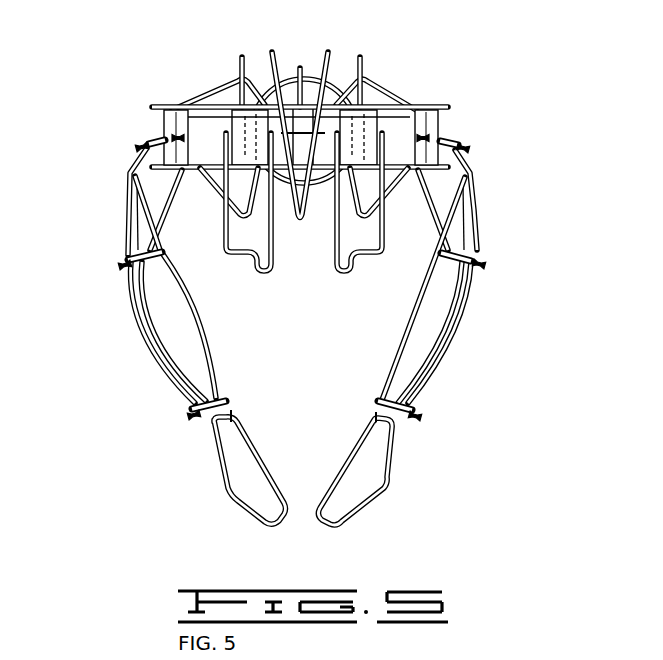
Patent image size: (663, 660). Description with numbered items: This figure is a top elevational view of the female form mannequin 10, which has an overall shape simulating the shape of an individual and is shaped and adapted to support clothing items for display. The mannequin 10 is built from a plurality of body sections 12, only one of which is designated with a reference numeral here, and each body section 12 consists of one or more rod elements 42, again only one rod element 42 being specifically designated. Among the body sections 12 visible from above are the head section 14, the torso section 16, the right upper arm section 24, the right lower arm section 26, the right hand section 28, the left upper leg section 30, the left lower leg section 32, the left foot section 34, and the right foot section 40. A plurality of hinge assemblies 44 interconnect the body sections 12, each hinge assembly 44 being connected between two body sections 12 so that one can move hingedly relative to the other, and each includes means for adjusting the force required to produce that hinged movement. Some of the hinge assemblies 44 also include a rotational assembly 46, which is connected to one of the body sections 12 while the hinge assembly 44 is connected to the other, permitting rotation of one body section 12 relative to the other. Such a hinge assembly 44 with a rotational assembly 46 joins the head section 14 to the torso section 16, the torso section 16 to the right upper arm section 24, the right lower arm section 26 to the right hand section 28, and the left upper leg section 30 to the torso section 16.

The mannequin 10 is at (317, 271).
The body section 12 is at (146, 341).
The head section 14 is at (272, 53).
The torso section 16 is at (415, 100).
The right upper arm section 24 is at (126, 216).
The right lower arm section 26 is at (138, 315).
The right hand section 28 is at (216, 469).
The left upper leg section 30 is at (482, 192).
The left lower leg section 32 is at (457, 348).
The left foot section 34 is at (351, 269).
The right foot section 40 is at (246, 266).
The rod element 42 is at (395, 361).
The hinge assembly 44 is at (307, 104).
The rotational assembly 46 is at (178, 117).